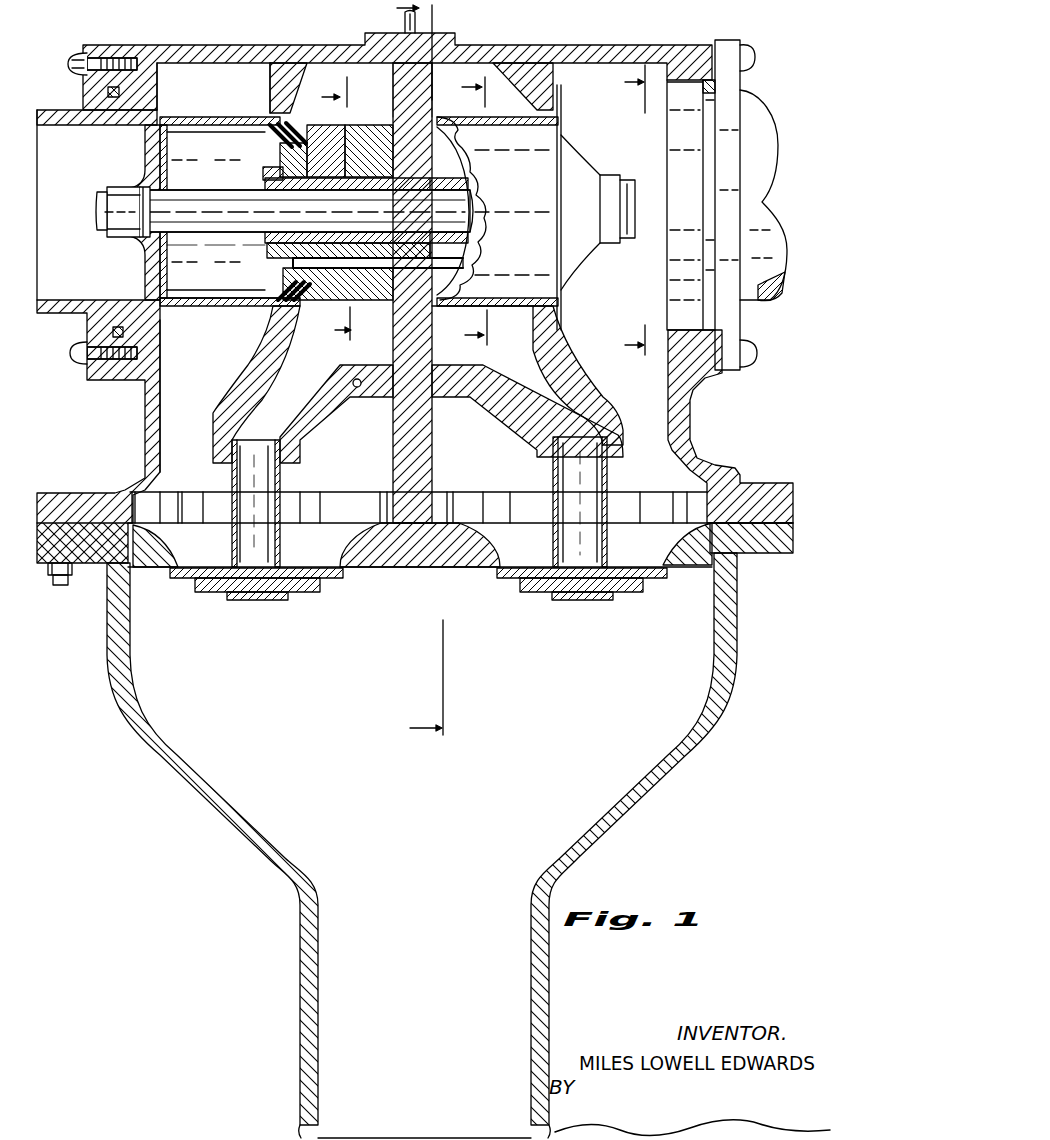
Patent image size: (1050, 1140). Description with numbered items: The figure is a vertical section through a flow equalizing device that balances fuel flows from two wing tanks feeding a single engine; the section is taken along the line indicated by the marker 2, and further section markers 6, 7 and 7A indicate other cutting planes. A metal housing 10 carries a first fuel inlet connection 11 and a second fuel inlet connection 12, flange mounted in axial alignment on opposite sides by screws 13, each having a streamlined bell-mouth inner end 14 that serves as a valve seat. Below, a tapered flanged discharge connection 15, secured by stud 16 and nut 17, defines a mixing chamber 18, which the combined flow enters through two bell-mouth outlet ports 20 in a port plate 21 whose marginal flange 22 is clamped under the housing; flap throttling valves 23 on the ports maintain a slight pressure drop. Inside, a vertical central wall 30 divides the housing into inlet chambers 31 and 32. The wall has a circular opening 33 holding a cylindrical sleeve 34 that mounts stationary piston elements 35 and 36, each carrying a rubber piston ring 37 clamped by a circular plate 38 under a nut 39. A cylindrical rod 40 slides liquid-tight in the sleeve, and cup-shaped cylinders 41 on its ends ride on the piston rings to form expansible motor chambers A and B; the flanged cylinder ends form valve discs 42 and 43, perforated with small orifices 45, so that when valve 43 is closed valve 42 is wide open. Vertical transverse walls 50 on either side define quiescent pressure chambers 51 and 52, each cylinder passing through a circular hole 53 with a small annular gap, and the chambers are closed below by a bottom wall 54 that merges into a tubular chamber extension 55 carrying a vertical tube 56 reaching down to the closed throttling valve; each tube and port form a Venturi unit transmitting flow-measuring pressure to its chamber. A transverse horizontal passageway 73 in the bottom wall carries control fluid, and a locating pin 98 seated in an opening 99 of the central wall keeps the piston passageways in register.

The housing 10 is at (690, 423).
The first fuel inlet connection 11 is at (758, 106).
The second fuel inlet connection 12 is at (57, 112).
The screws 13 is at (74, 61).
The bell-mouth inner ends 14 is at (145, 302).
The discharge connection 15 is at (192, 782).
The stud 16 is at (62, 586).
The nut 17 is at (52, 576).
The mixing chamber 18 is at (551, 723).
The outlet ports 20 is at (300, 535).
The port plate 21 is at (405, 565).
The marginal flange 22 is at (745, 555).
The throttling valves 23 is at (322, 578).
The central wall 30 is at (422, 430).
The inlet chamber 31 is at (624, 287).
The inlet chamber 32 is at (206, 370).
The circular opening 33 is at (410, 183).
The cylindrical sleeve 34 is at (380, 183).
The stationary piston element 35 is at (472, 200).
The stationary piston element 36 is at (310, 211).
The rubber piston ring 37 is at (292, 126).
The circular plate 38 is at (292, 158).
The nut 39 is at (270, 172).
The cylindrical rod 40 is at (262, 226).
The cup-shaped cylinders 41 is at (190, 118).
The valve disc 42 is at (562, 93).
The valve disc 43 is at (162, 93).
The orifices 45 is at (165, 310).
The vertical transverse walls 50 is at (295, 86).
The pressure chamber 51 is at (464, 78).
The pressure chamber 52 is at (389, 88).
The circular hole 53 is at (277, 310).
The bottom wall 54 is at (393, 392).
The tubular chamber extension 55 is at (213, 413).
The vertical tube 56 is at (232, 475).
The transverse horizontal passageway 73 is at (353, 382).
The locating pin 98 is at (345, 270).
The opening 99 is at (433, 306).
The expansible motor chamber A is at (478, 190).
The expansible motor chamber B is at (216, 267).
The section line 2 is at (423, 379).
The section line 6 is at (479, 210).
The section line 7 is at (340, 217).
The section line 7A is at (630, 215).